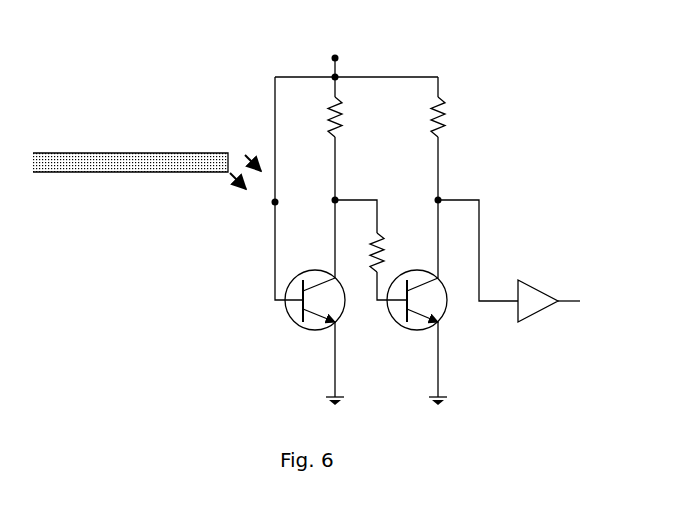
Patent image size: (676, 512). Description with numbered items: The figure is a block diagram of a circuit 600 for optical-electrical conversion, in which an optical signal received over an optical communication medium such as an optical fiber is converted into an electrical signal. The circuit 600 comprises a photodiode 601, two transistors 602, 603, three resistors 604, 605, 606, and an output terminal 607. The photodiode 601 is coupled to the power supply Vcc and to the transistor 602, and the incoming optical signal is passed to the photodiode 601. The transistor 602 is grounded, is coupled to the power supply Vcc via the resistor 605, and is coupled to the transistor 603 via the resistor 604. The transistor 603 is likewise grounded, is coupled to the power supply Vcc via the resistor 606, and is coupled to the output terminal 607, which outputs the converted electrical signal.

The circuit 600 is at (243, 66).
The photodiode 601 is at (273, 203).
The transistor 602 is at (292, 322).
The transistor 603 is at (397, 322).
The resistor 604 is at (384, 241).
The resistor 605 is at (345, 126).
The resistor 606 is at (447, 126).
The output terminal 607 is at (530, 283).